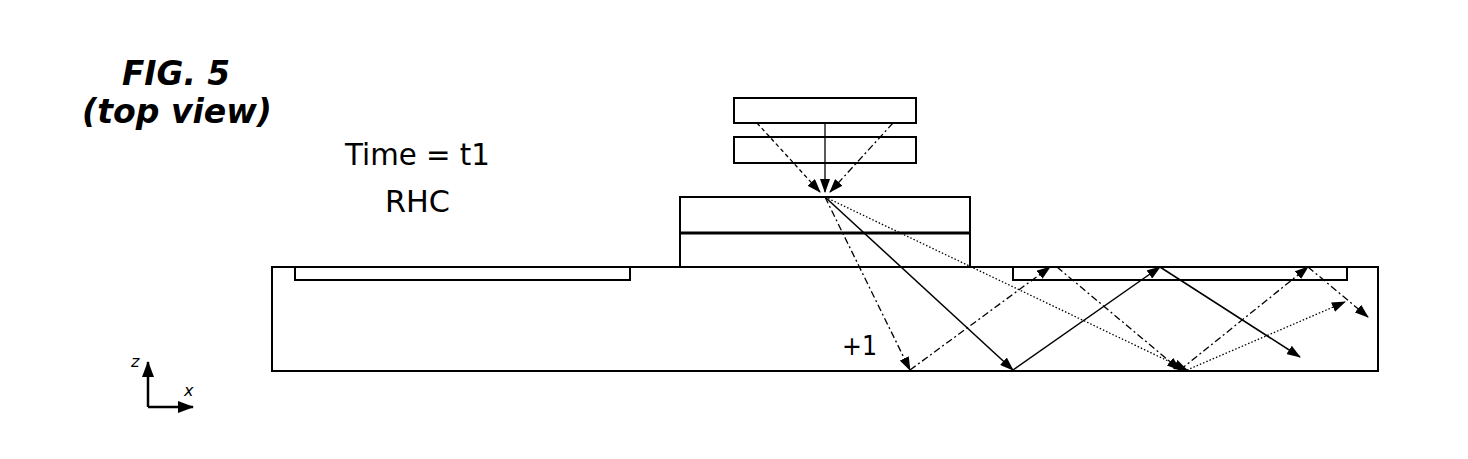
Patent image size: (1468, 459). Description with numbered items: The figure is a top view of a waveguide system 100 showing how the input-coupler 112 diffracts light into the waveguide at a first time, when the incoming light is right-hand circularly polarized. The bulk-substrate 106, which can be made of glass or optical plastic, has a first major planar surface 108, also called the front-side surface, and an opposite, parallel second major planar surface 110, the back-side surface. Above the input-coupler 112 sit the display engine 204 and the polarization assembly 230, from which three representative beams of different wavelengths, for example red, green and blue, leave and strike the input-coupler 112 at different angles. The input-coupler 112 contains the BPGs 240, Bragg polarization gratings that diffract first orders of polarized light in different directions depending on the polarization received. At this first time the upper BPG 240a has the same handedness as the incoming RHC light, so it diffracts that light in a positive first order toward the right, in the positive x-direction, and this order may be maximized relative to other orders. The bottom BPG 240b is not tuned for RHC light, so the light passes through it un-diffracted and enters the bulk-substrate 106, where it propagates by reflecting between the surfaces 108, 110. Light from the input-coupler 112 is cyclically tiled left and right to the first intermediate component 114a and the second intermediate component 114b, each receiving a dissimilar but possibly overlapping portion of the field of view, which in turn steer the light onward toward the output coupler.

The display system 100 is at (222, 283).
The bulk-substrate 106 is at (1378, 315).
The first major planar surface 108 is at (1325, 373).
The second major planar surface 110 is at (1330, 265).
The input-coupler 112 is at (658, 187).
The first intermediate component 114a is at (392, 282).
The second intermediate component 114b is at (1262, 265).
The display engine 204 is at (917, 113).
The polarization assembly 230 is at (917, 147).
The BPGs 240 is at (1083, 190).
The first BPG 240a is at (970, 217).
The second BPG 240b is at (970, 248).